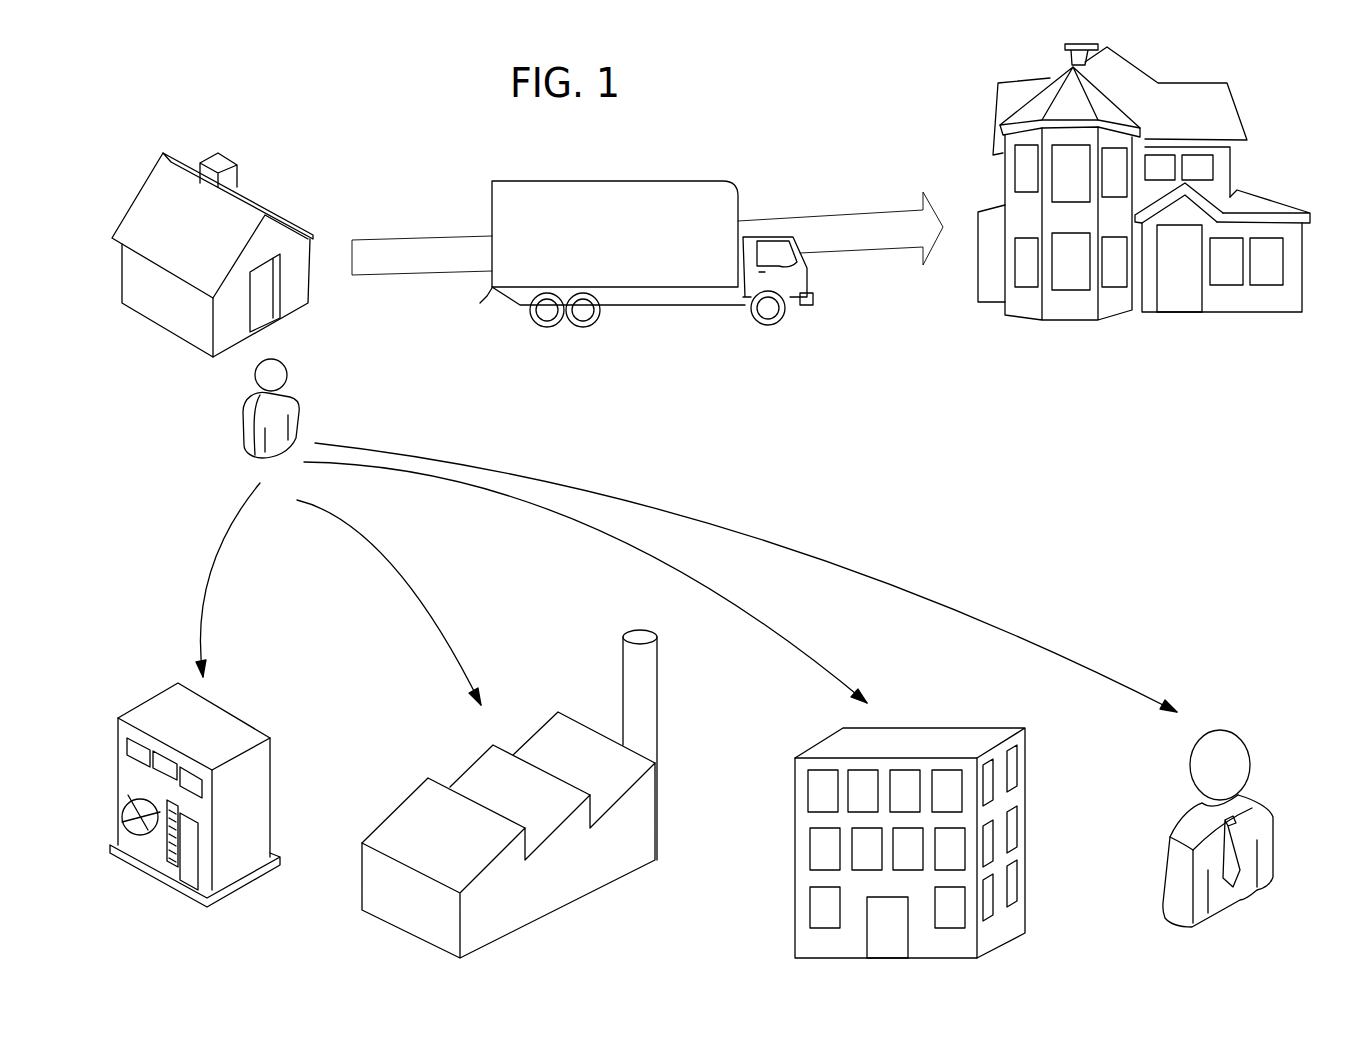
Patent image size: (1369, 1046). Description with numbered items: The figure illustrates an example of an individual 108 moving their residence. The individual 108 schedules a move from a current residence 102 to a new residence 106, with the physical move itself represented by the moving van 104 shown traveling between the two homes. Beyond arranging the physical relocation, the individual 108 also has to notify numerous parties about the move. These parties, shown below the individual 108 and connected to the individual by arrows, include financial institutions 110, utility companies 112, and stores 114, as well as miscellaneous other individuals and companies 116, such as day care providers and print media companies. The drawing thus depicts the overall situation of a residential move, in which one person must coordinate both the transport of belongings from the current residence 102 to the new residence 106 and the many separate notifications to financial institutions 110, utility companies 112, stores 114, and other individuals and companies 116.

The current residence 102 is at (233, 152).
The moving van 104 is at (670, 181).
The new residence 106 is at (1277, 197).
The individual 108 is at (300, 412).
The financial institutions 110 is at (233, 713).
The utility companies 112 is at (655, 735).
The stores 114 is at (952, 727).
The miscellaneous other individuals and companies 116 is at (1240, 742).